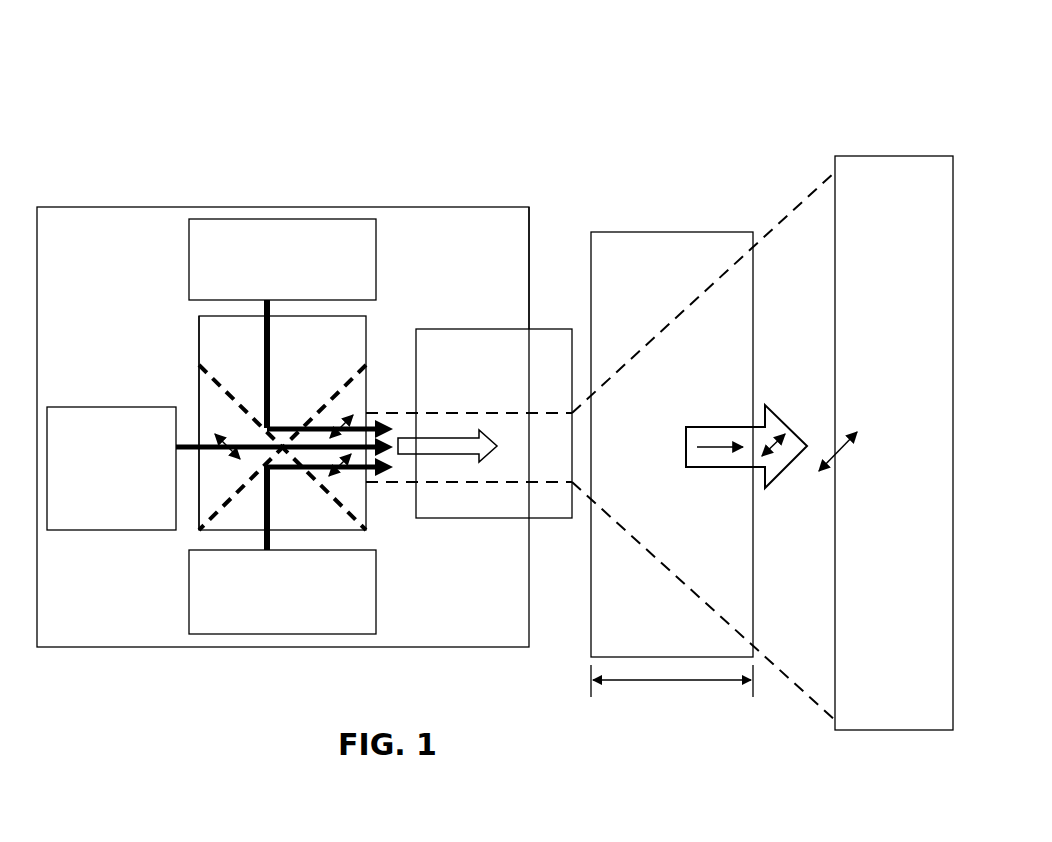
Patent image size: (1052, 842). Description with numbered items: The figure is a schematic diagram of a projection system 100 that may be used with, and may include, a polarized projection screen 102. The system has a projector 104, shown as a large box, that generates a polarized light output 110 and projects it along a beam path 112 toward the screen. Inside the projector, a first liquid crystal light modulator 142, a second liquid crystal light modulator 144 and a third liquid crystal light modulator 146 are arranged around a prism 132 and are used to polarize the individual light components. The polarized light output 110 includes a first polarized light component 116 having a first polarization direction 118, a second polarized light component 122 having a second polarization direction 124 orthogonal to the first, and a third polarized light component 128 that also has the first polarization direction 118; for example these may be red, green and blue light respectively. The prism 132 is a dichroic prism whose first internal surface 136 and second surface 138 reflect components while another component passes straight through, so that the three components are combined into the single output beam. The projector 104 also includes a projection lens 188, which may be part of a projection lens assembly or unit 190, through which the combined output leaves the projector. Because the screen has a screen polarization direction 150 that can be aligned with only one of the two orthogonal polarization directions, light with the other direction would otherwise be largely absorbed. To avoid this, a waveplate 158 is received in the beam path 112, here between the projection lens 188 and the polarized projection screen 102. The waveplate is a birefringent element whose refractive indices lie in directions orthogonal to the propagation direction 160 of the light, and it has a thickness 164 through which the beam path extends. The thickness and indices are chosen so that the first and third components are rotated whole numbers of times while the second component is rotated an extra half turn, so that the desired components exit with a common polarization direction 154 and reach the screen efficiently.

The projection system 100 is at (165, 80).
The polarized projection screen 102 is at (836, 156).
The projector 104 is at (476, 207).
The polarized light output 110 is at (456, 470).
The beam path 112 is at (421, 413).
The first polarized light component 116 is at (267, 342).
The first polarization direction 118 is at (345, 414).
The second polarized light component 122 is at (305, 440).
The second polarization direction 124 is at (233, 436).
The third polarized light component 128 is at (271, 530).
The prism 132 is at (199, 333).
The first internal surface 136 is at (205, 375).
The second surface 138 is at (225, 503).
The first liquid crystal light modulator 142 is at (343, 219).
The second liquid crystal light modulator 144 is at (78, 407).
The third liquid crystal light modulator 146 is at (189, 592).
The screen polarization direction 150 is at (843, 452).
The common polarization direction 154 is at (763, 440).
The waveplate 158 is at (622, 232).
The propagation direction 160 is at (704, 446).
The thickness 164 is at (686, 684).
The projection lens 188 is at (476, 329).
The projection lens assembly or unit 190 is at (549, 312).